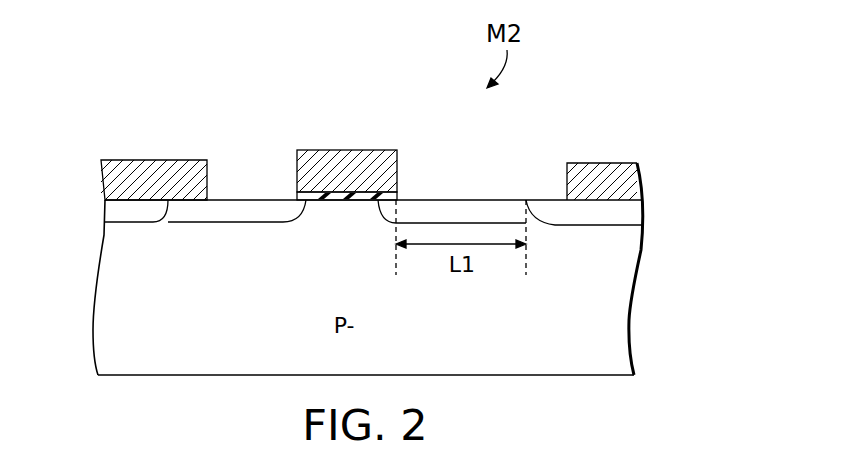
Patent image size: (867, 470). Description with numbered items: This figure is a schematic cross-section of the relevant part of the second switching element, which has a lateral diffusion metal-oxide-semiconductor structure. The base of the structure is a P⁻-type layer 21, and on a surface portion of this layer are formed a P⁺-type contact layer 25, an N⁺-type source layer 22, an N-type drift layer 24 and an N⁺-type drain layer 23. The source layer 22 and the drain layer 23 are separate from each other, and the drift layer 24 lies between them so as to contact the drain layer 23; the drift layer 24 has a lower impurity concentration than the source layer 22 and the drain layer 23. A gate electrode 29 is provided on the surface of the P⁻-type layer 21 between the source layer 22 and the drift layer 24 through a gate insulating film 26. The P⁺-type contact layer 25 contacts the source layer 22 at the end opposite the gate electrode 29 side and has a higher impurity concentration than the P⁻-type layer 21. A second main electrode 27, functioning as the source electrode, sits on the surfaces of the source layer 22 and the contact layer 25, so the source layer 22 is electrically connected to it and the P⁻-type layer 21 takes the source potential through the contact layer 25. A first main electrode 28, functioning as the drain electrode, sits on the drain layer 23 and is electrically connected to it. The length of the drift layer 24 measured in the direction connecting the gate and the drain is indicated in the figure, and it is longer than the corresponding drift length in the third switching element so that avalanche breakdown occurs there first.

The P⁻-type layer 21 is at (607, 319).
The N⁺-type source layer 22 is at (267, 215).
The N⁺-type drain layer 23 is at (550, 212).
The N-type drift layer 24 is at (432, 210).
The P⁺-type contact layer 25 is at (117, 210).
The gate insulating film 26 is at (310, 198).
The second main electrode 27 is at (182, 172).
The first main electrode 28 is at (600, 177).
The gate electrode 29 is at (342, 165).